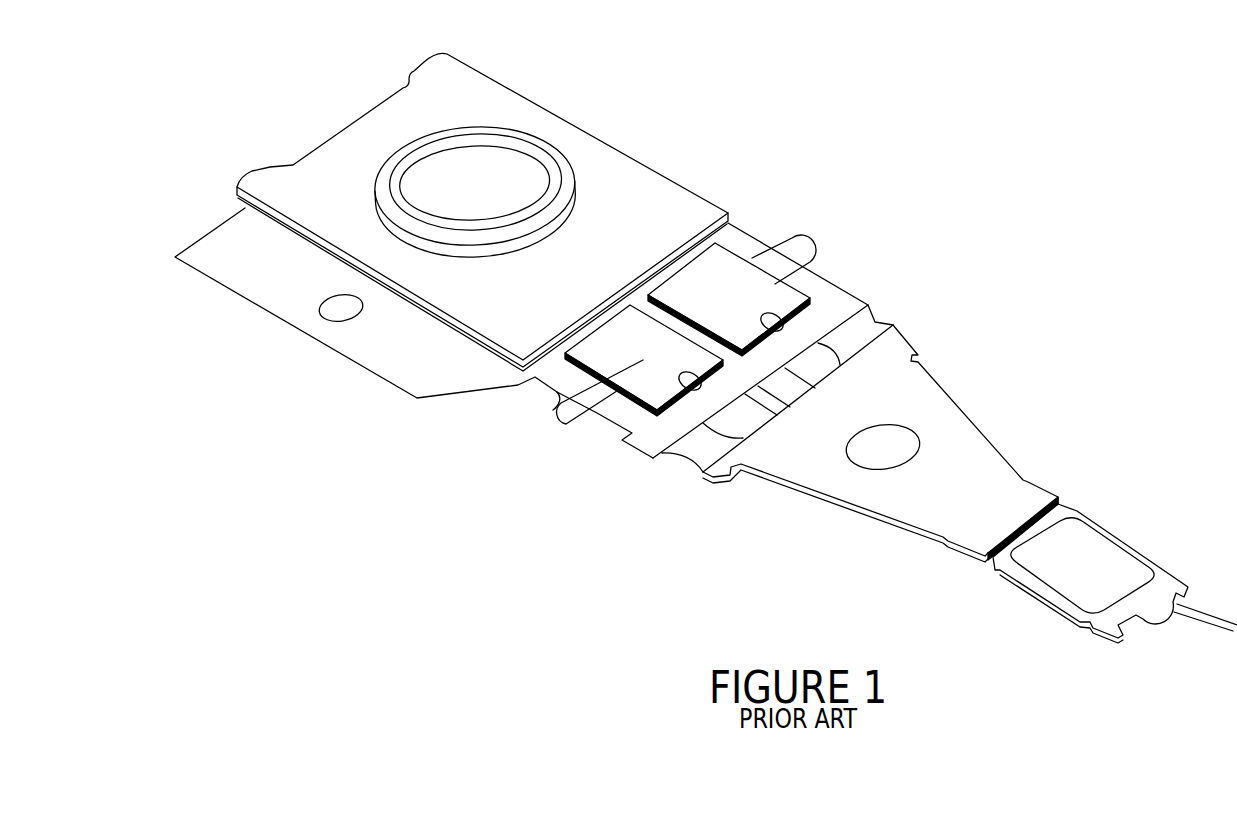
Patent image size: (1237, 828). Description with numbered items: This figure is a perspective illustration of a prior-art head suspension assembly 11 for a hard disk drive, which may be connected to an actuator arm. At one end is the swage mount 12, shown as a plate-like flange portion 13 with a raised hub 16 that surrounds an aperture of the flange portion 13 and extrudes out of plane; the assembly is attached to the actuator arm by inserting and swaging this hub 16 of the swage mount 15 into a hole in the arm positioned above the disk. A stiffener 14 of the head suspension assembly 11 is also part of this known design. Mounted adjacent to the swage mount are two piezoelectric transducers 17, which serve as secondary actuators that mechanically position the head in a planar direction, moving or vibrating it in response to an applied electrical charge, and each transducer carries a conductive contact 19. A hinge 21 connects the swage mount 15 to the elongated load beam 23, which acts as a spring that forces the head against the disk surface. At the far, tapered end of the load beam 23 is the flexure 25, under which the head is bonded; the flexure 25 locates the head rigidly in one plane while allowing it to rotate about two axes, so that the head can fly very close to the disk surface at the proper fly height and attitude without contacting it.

The head suspension assembly 11 is at (1102, 122).
The swage mount 12 is at (560, 162).
The flange portion 13 is at (470, 80).
The stiffener 14 is at (827, 250).
The swage mount 15 is at (768, 172).
The hub 16 is at (403, 156).
The piezoelectric transducers 17 is at (561, 403).
The conductive contacts 19 is at (688, 383).
The hinge 21 is at (878, 327).
The load beam 23 is at (962, 428).
The flexure 25 is at (1137, 552).